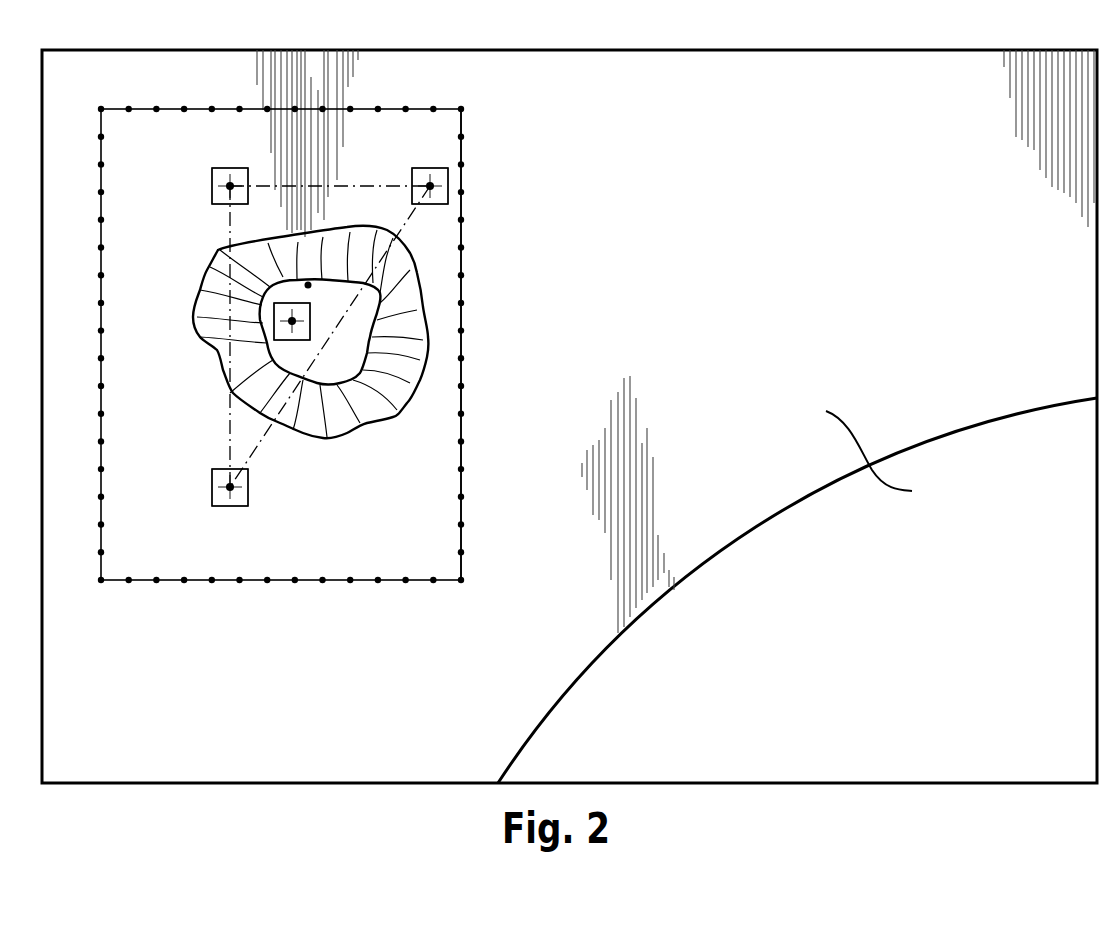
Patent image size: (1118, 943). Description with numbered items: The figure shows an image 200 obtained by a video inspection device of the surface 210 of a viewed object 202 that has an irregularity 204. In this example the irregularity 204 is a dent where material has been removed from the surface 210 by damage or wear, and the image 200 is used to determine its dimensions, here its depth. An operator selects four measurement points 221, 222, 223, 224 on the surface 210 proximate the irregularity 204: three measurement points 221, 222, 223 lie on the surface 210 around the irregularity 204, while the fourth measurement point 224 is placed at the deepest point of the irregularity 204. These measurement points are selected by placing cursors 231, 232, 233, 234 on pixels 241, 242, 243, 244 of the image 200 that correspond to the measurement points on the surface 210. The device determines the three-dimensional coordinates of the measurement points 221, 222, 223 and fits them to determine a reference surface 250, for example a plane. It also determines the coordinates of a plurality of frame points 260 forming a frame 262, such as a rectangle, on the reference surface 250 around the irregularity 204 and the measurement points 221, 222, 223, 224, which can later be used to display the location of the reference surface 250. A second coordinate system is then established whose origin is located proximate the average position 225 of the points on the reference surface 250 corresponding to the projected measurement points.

The image 200 is at (505, 50).
The viewed object 202 is at (717, 553).
The irregularity 204 is at (371, 331).
The surface 210 is at (893, 458).
The first measurement point 221 is at (230, 186).
The second measurement point 222 is at (230, 487).
The third measurement point 223 is at (430, 186).
The fourth measurement point 224 is at (292, 321).
The average position 225 is at (308, 285).
The first cursor 231 is at (223, 167).
The second cursor 232 is at (248, 485).
The third cursor 233 is at (423, 167).
The fourth cursor 234 is at (275, 321).
The first pixel 241 is at (230, 186).
The second pixel 242 is at (230, 487).
The third pixel 243 is at (430, 186).
The fourth pixel 244 is at (292, 321).
The reference surface 250 is at (385, 224).
The frame points 260 is at (461, 527).
The frame 262 is at (461, 452).